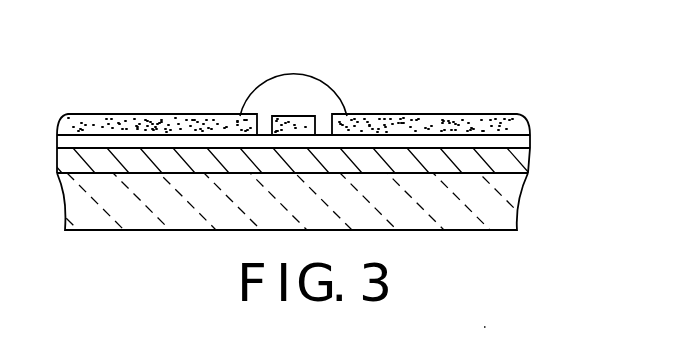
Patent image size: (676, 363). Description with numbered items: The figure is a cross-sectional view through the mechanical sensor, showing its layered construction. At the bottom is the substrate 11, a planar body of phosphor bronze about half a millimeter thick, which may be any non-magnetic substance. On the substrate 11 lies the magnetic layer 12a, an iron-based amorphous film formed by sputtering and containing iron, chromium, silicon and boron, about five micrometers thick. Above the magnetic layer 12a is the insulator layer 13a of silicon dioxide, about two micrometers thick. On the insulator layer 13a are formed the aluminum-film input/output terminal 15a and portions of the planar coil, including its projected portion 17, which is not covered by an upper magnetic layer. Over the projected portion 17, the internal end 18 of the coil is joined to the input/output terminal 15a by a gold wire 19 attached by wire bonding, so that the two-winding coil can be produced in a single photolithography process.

The substrate 11 is at (514, 206).
The magnetic layer 12a is at (515, 164).
The insulator layer 13a is at (522, 143).
The input/output terminal 15a is at (442, 120).
The projected portion 17 is at (285, 122).
The internal end 18 is at (128, 120).
The gold wire 19 is at (330, 88).